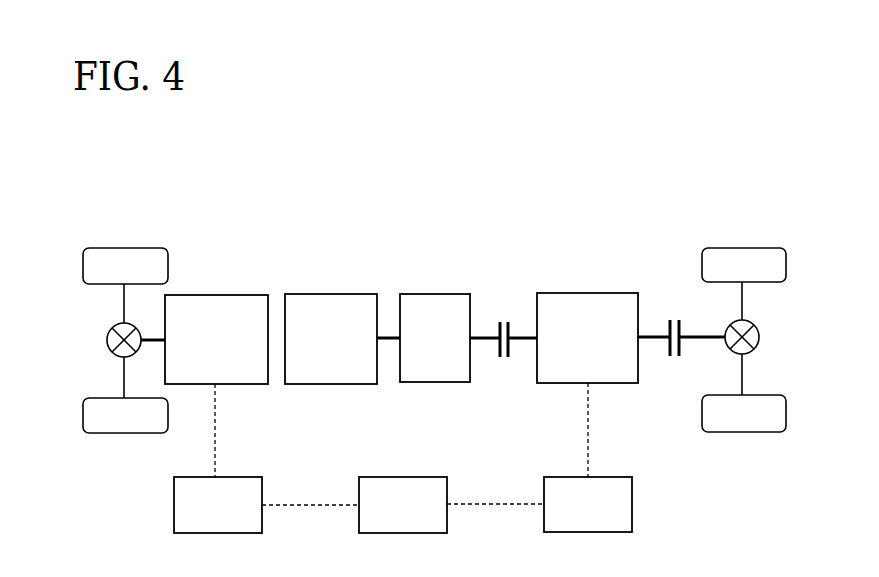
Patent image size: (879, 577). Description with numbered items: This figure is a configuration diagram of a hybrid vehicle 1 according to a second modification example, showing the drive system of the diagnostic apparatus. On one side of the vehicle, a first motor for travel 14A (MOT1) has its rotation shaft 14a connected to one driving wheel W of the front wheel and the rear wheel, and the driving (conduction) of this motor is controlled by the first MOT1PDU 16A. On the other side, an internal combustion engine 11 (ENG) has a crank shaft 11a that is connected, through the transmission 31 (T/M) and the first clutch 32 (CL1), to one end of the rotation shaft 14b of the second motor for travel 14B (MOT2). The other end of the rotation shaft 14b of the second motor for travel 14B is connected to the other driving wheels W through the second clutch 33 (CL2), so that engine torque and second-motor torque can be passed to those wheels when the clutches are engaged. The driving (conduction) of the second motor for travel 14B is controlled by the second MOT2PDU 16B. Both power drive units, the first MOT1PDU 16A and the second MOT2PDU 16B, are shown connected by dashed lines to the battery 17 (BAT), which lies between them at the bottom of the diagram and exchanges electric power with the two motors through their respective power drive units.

The hybrid vehicle 1 is at (813, 207).
The internal combustion engine 11 is at (328, 294).
The crank shaft 11a is at (387, 335).
The first motor for travel 14A is at (220, 295).
The rotation shaft of the motor for travel 14a is at (150, 332).
The second motor for travel 14B is at (587, 293).
The rotation shaft of the second motor for travel 14b is at (652, 333).
The first MOT1PDU 16A is at (240, 477).
The second MOT2PDU 16B is at (632, 503).
The battery 17 is at (400, 477).
The transmission 31 is at (433, 294).
The first clutch 32 is at (502, 322).
The second clutch 33 is at (682, 330).